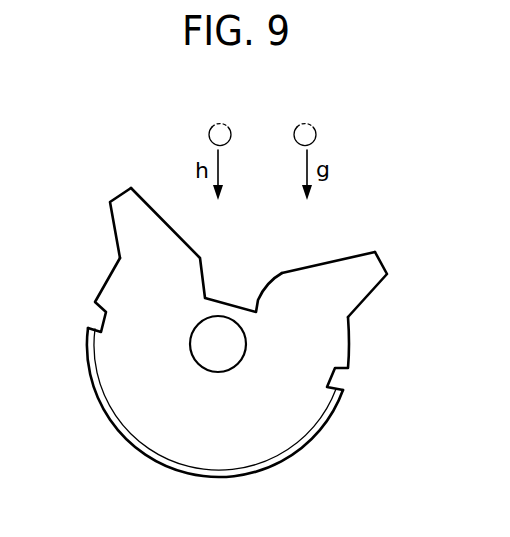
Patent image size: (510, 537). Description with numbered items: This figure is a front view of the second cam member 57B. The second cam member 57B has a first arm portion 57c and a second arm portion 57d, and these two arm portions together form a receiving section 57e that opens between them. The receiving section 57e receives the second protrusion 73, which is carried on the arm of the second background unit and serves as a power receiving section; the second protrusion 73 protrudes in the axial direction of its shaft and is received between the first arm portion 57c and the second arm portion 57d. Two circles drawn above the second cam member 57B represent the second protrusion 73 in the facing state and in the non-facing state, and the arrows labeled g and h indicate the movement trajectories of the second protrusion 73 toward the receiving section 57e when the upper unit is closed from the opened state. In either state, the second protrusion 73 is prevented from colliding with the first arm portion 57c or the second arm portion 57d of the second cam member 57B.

The second protrusion 73 is at (208, 132).
The first arm portion 57c is at (119, 204).
The second arm portion 57d is at (373, 280).
The receiving section 57e is at (307, 240).
The second cam member 57B is at (292, 447).